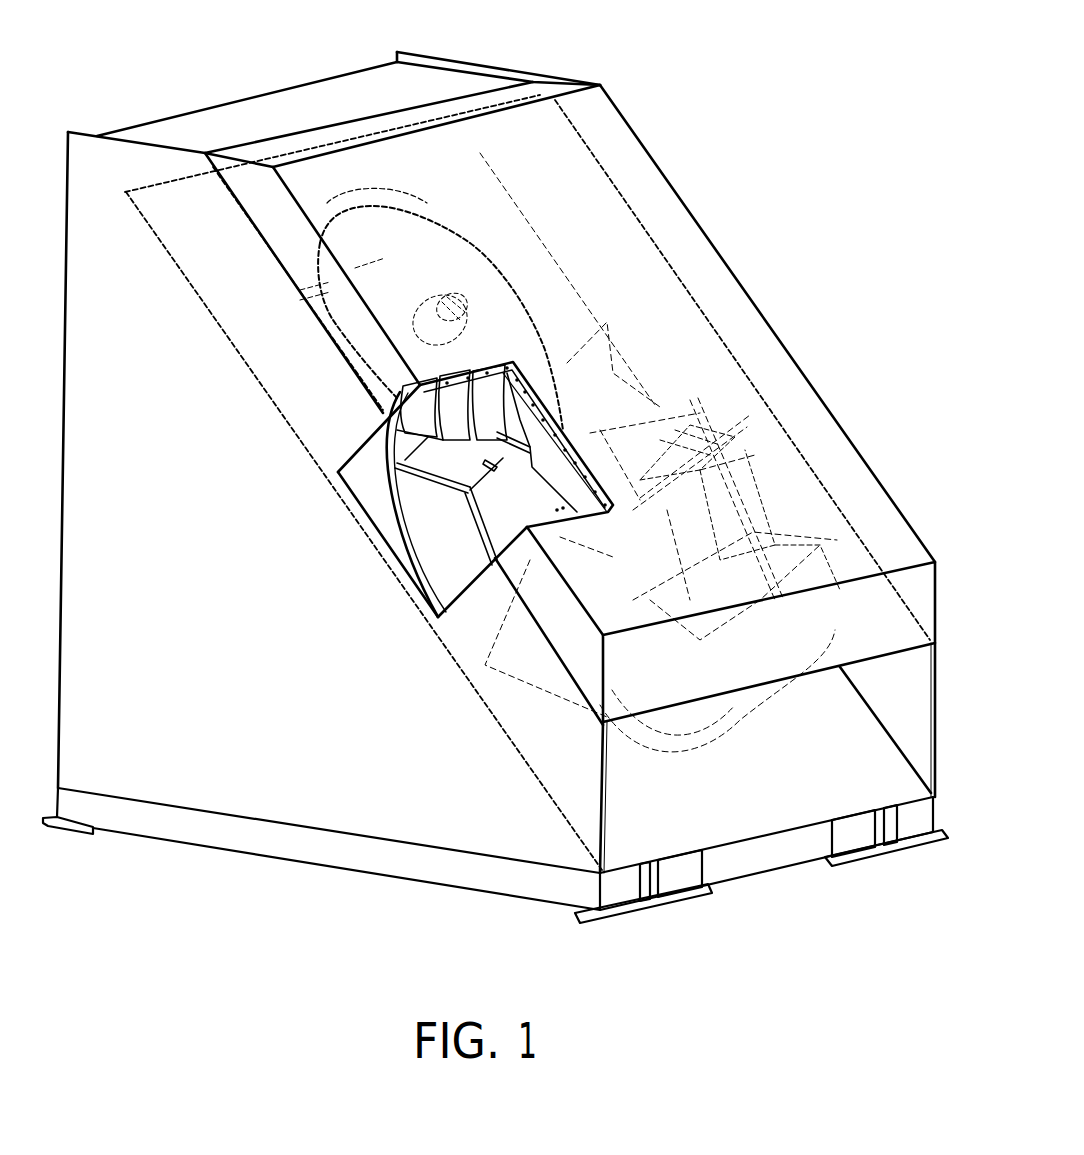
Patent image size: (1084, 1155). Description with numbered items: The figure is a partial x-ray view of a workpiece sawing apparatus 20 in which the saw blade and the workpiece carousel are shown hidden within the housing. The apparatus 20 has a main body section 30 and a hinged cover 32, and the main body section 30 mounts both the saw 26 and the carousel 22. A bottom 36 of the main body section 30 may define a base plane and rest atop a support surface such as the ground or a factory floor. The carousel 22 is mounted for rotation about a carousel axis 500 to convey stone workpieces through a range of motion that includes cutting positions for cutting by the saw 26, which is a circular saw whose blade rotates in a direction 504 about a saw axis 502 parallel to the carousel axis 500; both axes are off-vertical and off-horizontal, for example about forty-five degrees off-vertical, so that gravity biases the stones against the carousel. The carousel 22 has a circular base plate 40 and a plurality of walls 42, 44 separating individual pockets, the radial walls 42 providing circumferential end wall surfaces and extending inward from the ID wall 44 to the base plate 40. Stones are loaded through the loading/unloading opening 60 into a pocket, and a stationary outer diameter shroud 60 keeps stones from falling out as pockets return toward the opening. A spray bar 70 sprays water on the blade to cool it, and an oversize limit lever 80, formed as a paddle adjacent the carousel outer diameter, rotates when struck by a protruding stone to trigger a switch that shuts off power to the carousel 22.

The apparatus 20 is at (762, 228).
The carousel 22 is at (748, 498).
The saw 26 is at (440, 238).
The main body section 30 is at (181, 758).
The hinged cover 32 is at (883, 533).
The bottom 36 is at (653, 920).
The base plate 40 is at (440, 523).
The radial walls 42 is at (450, 452).
The ID wall 44 is at (513, 515).
The loading/unloading opening 60 is at (358, 549).
The spray bar 70 is at (343, 282).
The oversize limit lever 80 is at (367, 418).
The carousel axis 500 is at (590, 533).
The saw axis 502 is at (452, 303).
The direction of blade rotation 504 is at (385, 190).